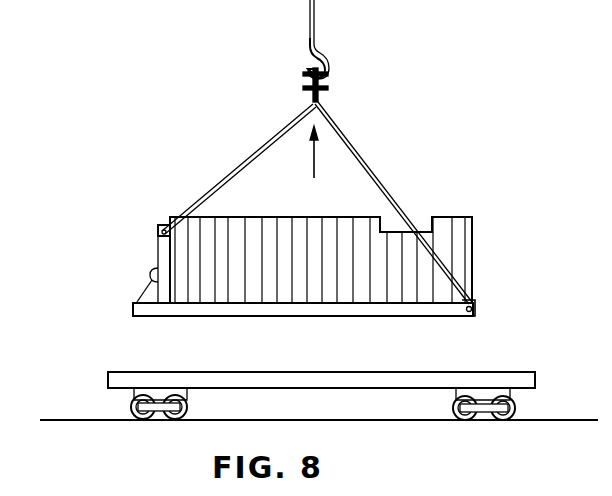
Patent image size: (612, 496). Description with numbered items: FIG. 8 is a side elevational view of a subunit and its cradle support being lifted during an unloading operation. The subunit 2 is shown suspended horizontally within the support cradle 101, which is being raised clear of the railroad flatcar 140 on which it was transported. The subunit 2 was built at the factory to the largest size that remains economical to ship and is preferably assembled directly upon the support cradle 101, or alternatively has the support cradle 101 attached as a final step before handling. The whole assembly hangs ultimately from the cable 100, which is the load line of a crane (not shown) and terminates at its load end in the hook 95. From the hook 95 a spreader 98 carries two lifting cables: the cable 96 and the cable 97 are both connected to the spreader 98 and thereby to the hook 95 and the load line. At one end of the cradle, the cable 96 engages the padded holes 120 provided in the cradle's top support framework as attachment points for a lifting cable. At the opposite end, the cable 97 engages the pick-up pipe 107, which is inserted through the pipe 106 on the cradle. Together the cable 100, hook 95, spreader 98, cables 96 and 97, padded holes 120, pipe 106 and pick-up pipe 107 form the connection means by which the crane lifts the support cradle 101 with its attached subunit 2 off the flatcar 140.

The subunit 2 is at (440, 216).
The hook 95 is at (323, 54).
The cable 96 is at (260, 150).
The cable 97 is at (362, 152).
The spreader 98 is at (311, 86).
The cable 100 is at (312, 13).
The support cradle 101 is at (166, 317).
The pipe 106 is at (478, 317).
The pick-up pipe 107 is at (475, 305).
The padded holes 120 is at (158, 232).
The railroad flatcar 140 is at (206, 371).